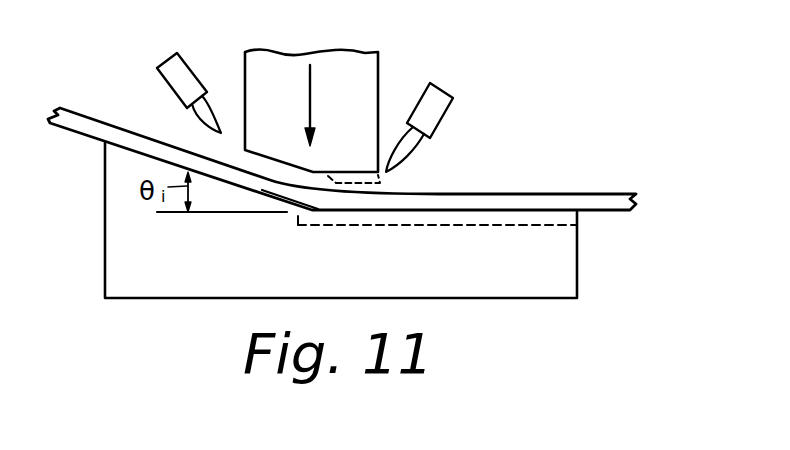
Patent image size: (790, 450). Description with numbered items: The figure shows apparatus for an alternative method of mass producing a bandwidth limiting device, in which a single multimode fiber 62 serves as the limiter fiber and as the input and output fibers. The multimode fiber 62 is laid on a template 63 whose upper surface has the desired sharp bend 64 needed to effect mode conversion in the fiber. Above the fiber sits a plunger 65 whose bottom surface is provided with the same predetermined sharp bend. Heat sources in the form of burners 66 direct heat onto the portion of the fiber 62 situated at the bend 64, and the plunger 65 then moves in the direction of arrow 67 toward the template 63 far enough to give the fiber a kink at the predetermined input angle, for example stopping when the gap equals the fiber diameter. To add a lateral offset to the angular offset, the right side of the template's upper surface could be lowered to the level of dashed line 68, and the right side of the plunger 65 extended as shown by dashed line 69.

The multimode fiber 62 is at (568, 194).
The template 63 is at (578, 250).
The sharp bend 64 is at (316, 236).
The plunger 65 is at (378, 72).
The burners 66 is at (194, 73).
The arrow 67 is at (311, 112).
The dashed line 68 is at (418, 228).
The dashed line 69 is at (383, 186).